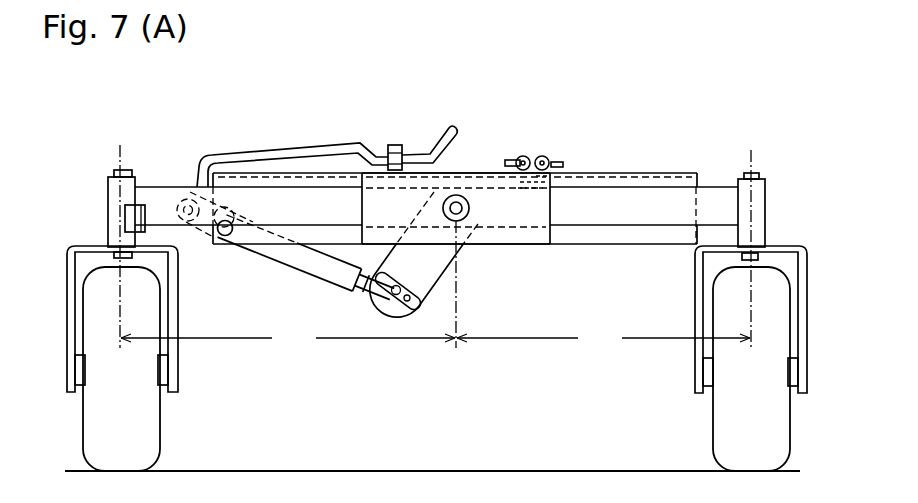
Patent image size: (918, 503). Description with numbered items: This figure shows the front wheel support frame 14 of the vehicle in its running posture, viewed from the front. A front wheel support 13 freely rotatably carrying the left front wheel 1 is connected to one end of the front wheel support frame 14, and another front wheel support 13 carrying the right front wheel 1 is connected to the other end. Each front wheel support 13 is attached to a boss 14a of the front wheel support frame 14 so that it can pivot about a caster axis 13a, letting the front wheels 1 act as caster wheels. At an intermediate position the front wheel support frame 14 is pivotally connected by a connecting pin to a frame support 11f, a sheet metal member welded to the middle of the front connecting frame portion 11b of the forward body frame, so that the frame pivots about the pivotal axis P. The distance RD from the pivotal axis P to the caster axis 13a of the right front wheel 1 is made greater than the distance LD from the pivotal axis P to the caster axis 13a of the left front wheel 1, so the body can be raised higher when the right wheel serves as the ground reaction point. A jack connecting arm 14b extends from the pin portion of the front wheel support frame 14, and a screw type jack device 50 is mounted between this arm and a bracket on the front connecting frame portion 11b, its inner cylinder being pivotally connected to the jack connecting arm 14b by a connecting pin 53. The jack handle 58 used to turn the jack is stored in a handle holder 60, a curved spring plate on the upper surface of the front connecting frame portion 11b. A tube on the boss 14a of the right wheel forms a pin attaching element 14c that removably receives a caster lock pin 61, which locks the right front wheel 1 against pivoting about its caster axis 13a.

The front wheel 1 is at (155, 438).
The front wheel support 13 is at (178, 348).
The caster axis 13a is at (120, 155).
The front wheel support frame 14 is at (650, 198).
The boss 14a is at (107, 198).
The jack connecting arm 14b is at (418, 312).
The pin attaching element 14c is at (145, 213).
The front connecting frame portion 11b is at (605, 172).
The frame support 11f is at (472, 173).
The jack device 50 is at (281, 263).
The connecting pin 53 is at (393, 298).
The jack handle 58 is at (240, 155).
The handle holder 60 is at (390, 145).
The caster lock pin 61 is at (542, 156).
The pivotal axis P is at (470, 207).
The distance RD is at (288, 341).
The distance LD is at (603, 341).